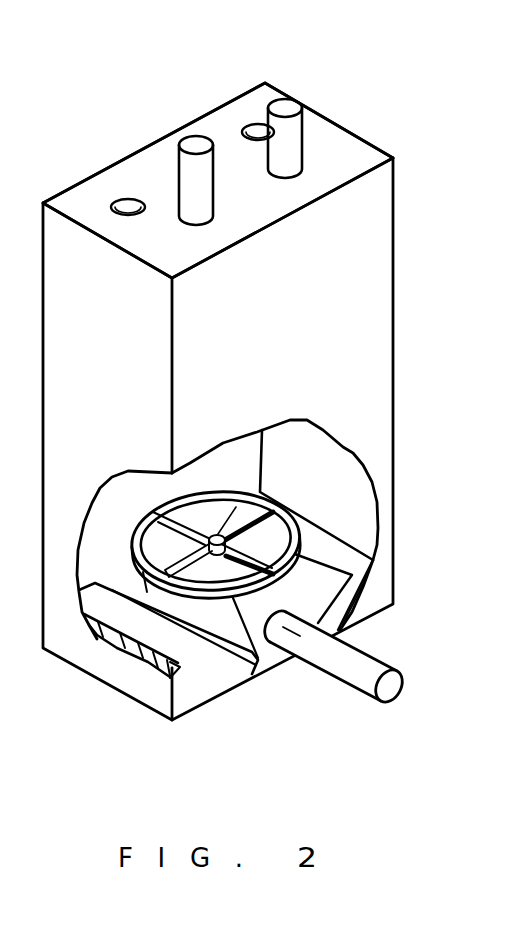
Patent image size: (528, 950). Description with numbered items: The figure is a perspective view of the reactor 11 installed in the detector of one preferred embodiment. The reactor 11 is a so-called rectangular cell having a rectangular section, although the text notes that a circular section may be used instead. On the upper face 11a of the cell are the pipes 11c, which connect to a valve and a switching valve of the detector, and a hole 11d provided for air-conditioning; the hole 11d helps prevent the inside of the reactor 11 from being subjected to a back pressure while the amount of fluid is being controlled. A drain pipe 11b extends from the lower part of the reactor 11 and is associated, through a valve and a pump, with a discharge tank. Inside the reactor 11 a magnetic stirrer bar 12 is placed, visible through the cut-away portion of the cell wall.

The reactor 11 is at (398, 339).
The upper face 11a is at (352, 163).
The drain pipe 11b is at (360, 667).
The pipes 11c is at (293, 138).
The hole 11d is at (123, 203).
The magnetic stirrer bar 12 is at (300, 515).